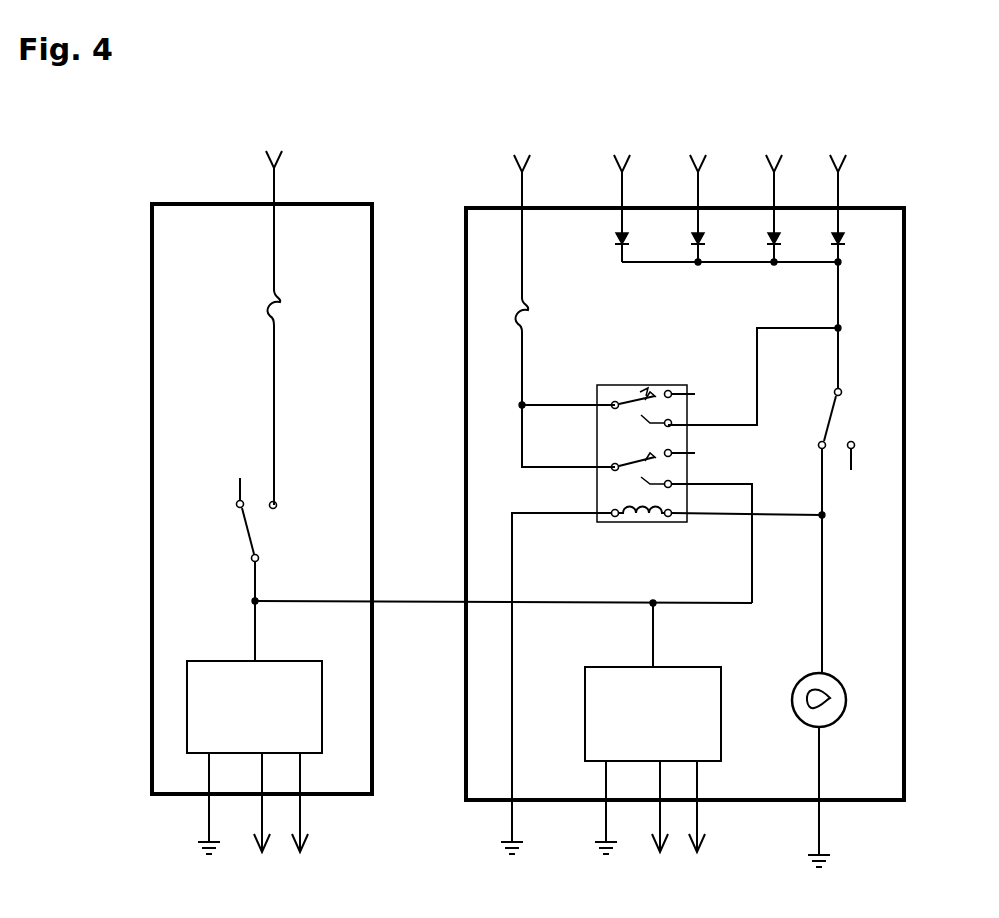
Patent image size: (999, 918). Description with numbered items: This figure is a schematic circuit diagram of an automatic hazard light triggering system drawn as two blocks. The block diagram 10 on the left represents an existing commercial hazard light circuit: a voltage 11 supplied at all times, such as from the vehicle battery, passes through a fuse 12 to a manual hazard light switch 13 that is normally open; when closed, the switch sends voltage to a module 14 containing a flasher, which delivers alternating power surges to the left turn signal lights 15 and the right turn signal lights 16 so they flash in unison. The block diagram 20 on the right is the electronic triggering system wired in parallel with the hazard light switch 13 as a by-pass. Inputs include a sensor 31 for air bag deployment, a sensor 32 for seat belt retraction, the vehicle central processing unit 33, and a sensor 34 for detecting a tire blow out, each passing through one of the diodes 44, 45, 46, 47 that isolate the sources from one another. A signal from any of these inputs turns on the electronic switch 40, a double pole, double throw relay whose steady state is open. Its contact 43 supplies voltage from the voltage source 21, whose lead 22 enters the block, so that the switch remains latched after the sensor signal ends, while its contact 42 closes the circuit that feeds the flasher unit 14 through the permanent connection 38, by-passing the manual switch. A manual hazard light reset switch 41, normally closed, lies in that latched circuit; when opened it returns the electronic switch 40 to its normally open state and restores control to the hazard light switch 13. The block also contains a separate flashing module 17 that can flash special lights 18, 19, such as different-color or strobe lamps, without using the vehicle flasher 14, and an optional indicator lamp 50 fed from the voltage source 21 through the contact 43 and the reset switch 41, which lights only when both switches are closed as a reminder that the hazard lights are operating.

The block diagram 10 is at (152, 228).
The voltage 11 is at (278, 162).
The fuse 12 is at (284, 296).
The hazard light switch 13 is at (246, 534).
The module 14 is at (202, 661).
The left turn signal lights 15 is at (262, 853).
The right turn signal lights 16 is at (300, 853).
The separate flashing module 17 is at (602, 667).
The special lights 18 is at (660, 853).
The special lights 19 is at (697, 853).
The block diagram 20 is at (906, 240).
The voltage source 21 is at (526, 168).
The antenna lead 22 is at (594, 287).
The sensor 31 is at (626, 168).
The sensor 32 is at (702, 168).
The central processing unit 33 is at (778, 168).
The sensor 34 is at (842, 168).
The permanent connection 38 is at (400, 602).
The electronic switch 40 is at (661, 594).
The hazard light reset switch 41 is at (830, 420).
The contact 42 is at (642, 462).
The contact 43 is at (641, 403).
The diode 44 is at (614, 242).
The diode 45 is at (690, 243).
The diode 46 is at (766, 243).
The diode 47 is at (830, 243).
The indicator lamp 50 is at (842, 692).